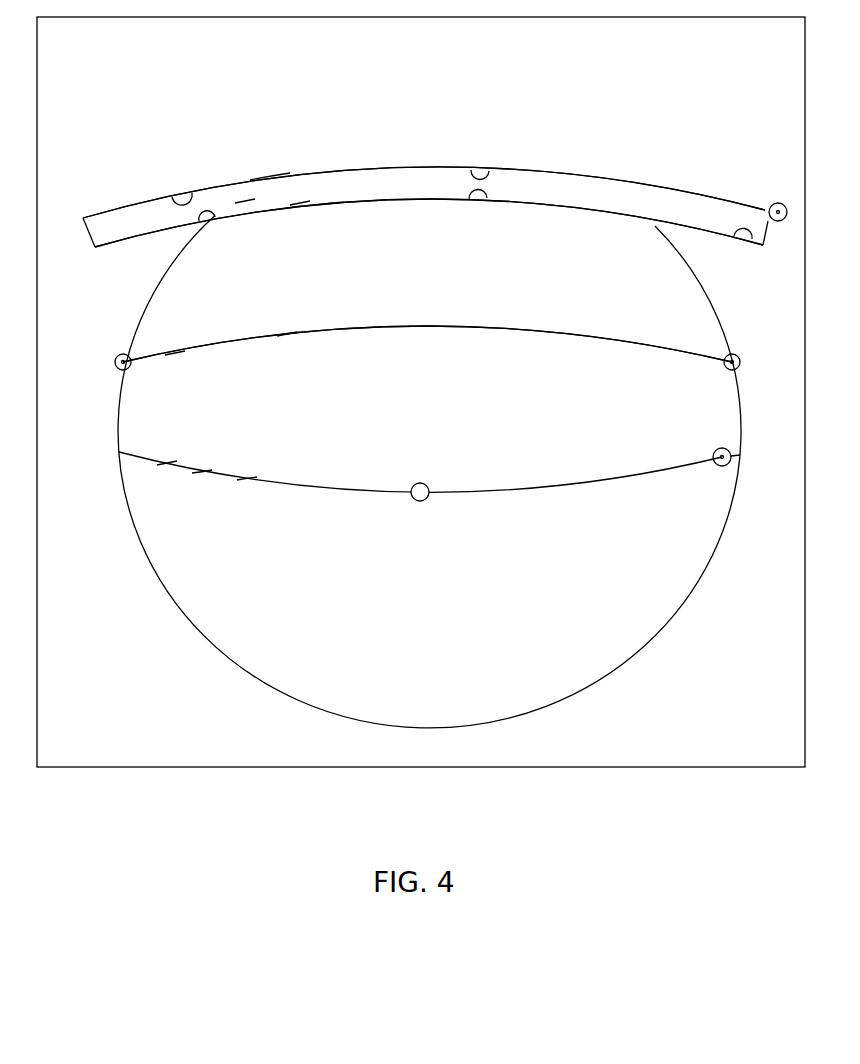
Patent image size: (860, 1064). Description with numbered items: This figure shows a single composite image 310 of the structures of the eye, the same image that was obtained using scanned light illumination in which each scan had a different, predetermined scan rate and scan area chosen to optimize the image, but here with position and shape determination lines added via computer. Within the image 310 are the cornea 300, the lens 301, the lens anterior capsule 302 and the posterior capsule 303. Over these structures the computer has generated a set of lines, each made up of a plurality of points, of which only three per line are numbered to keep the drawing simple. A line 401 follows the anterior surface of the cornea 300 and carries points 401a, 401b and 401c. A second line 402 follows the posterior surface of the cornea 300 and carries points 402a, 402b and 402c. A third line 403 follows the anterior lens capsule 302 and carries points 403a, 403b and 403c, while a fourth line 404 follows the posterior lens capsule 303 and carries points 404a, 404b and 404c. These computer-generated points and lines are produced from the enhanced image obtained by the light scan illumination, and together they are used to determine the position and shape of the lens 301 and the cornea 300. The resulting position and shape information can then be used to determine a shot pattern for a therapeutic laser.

The cornea 300 is at (628, 192).
The lens 301 is at (575, 440).
The lens anterior capsule 302 is at (568, 333).
The posterior capsule 303 is at (541, 487).
The image 310 is at (688, 99).
The line 401 is at (230, 183).
The point 401a is at (181, 190).
The point 401b is at (260, 180).
The point 401c is at (363, 170).
The line 402 is at (368, 202).
The point 402a is at (205, 222).
The point 402b is at (245, 201).
The point 402c is at (300, 204).
The line 403 is at (337, 331).
The point 403a is at (143, 357).
The point 403b is at (175, 355).
The point 403c is at (287, 335).
The line 404 is at (335, 489).
The point 404a is at (167, 463).
The point 404b is at (202, 473).
The point 404c is at (247, 479).